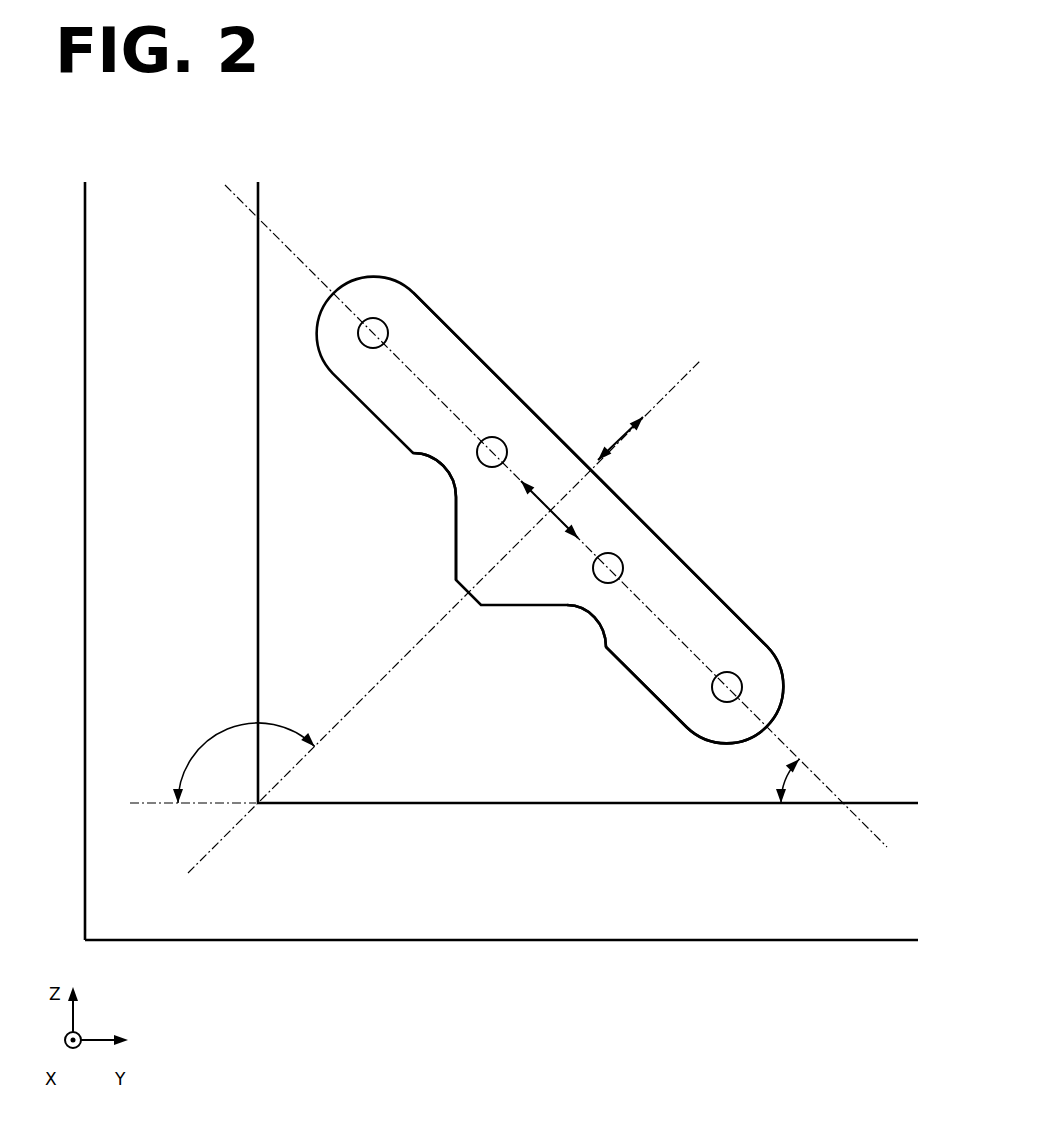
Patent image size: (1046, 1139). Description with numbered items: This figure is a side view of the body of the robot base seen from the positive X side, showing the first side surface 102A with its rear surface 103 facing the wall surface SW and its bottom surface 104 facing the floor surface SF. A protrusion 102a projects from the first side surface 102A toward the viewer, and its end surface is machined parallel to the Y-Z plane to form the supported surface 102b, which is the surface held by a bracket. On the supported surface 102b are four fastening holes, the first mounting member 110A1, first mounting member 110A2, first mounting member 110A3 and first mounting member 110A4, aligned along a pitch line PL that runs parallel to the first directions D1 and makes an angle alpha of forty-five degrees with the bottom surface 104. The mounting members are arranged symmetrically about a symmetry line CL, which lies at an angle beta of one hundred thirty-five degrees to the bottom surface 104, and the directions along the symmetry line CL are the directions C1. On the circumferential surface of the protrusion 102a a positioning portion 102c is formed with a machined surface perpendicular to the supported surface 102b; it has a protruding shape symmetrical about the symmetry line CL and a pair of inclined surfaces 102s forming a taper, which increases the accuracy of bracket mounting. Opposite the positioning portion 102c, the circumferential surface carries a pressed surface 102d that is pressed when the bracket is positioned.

The first side surface 102A is at (293, 572).
The protrusion 102a is at (492, 330).
The supported surface 102b is at (668, 610).
The positioning portion 102c is at (466, 563).
The pressed surface 102d is at (657, 517).
The inclined surfaces 102s is at (455, 543).
The rear surface 103 is at (258, 503).
The bottom surface 104 is at (516, 803).
The first mounting member 110A1 is at (382, 320).
The first mounting member 110A2 is at (502, 440).
The first mounting member 110A3 is at (596, 584).
The first mounting member 110A4 is at (717, 703).
The pitch line PL is at (246, 195).
The symmetry line CL is at (668, 386).
The directions C1 is at (622, 440).
The first directions D1 is at (560, 512).
The wall surface SW is at (85, 294).
The floor surface SF is at (500, 940).
The angle alpha is at (772, 781).
The angle beta is at (244, 759).